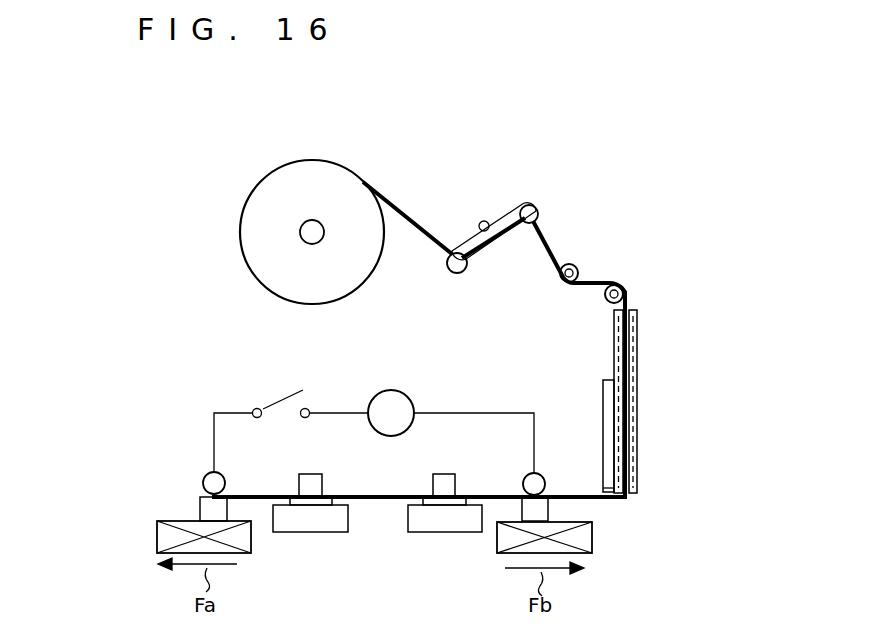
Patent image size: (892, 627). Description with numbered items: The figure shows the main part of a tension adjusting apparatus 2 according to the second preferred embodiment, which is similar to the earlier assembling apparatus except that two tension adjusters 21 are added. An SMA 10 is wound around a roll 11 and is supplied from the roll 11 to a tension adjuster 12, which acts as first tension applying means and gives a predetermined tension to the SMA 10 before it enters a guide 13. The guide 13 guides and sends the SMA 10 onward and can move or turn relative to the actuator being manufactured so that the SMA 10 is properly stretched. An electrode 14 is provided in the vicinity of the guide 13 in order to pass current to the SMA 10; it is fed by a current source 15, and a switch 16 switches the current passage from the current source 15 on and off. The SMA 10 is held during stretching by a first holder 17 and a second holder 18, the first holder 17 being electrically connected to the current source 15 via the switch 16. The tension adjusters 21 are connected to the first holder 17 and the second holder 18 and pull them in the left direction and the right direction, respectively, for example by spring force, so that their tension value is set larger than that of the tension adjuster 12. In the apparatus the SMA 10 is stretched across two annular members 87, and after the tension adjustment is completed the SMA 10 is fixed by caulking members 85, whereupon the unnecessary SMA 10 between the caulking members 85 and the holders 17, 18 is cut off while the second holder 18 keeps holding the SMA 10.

The tension adjusting apparatus 2 is at (127, 167).
The SMA 10 is at (410, 217).
The roll 11 is at (312, 162).
The tension adjuster 12 is at (510, 199).
The guide 13 is at (638, 375).
The electrode 14 is at (602, 394).
The current source 15 is at (392, 390).
The switch 16 is at (275, 389).
The first holder 17 is at (203, 471).
The second holder 18 is at (546, 473).
The tension adjuster 21 is at (156, 533).
The caulking member 85 is at (313, 473).
The annular member 87 is at (311, 536).